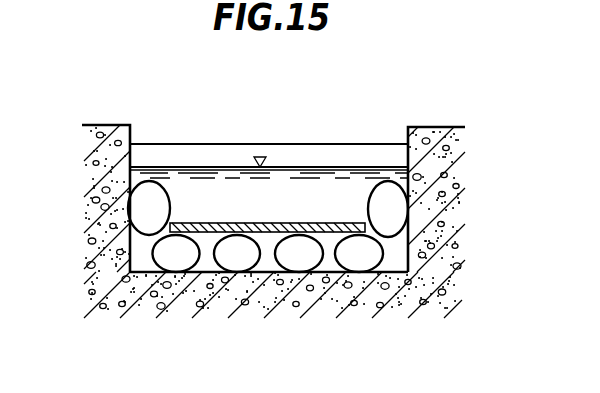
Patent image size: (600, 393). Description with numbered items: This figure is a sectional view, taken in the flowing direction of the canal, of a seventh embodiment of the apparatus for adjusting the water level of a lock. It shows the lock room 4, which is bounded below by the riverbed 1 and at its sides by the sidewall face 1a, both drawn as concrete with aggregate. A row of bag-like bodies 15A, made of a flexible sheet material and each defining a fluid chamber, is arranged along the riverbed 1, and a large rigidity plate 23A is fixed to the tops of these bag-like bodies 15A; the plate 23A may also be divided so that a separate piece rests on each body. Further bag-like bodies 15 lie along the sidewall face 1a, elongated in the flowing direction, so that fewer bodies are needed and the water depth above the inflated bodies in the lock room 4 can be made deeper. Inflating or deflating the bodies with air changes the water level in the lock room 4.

The riverbed 1 is at (328, 296).
The sidewall face 1a is at (445, 171).
The lock room 4 is at (244, 135).
The bag-like body 15 is at (162, 185).
The bag-like body 15A is at (383, 254).
The large rigidity plate 23A is at (291, 223).